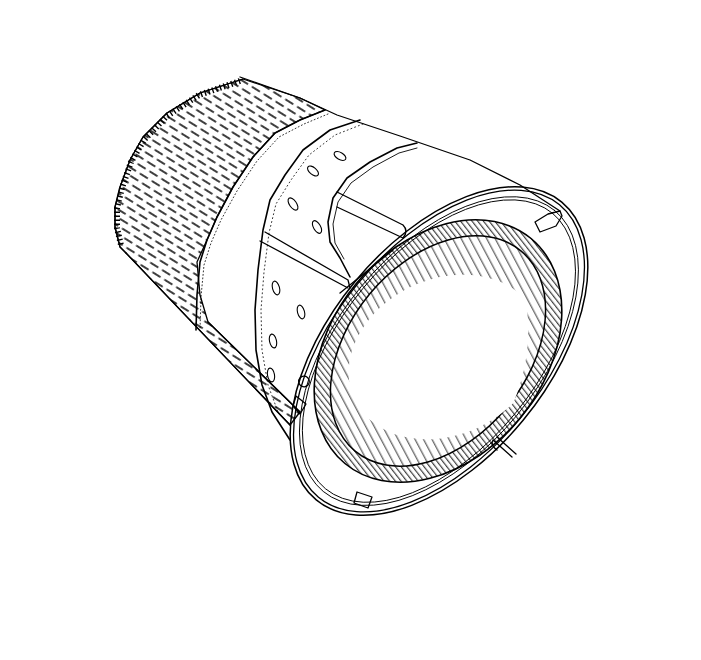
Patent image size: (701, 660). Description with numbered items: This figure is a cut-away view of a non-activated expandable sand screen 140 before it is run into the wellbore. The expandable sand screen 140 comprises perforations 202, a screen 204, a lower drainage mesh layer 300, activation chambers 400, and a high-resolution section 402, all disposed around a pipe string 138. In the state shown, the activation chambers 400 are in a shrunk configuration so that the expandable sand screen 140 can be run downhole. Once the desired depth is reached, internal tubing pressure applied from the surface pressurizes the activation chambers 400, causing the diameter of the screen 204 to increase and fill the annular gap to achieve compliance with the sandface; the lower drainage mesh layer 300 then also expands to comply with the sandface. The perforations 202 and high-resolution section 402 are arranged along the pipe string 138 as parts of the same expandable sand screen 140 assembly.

The expandable sand screen 140 is at (146, 48).
The screen 204 is at (273, 97).
The lower drainage mesh layer 300 is at (345, 128).
The perforations 202 is at (400, 150).
The pipe string 138 is at (503, 447).
The activation chambers 400 is at (303, 403).
The high-resolution section 402 is at (360, 500).